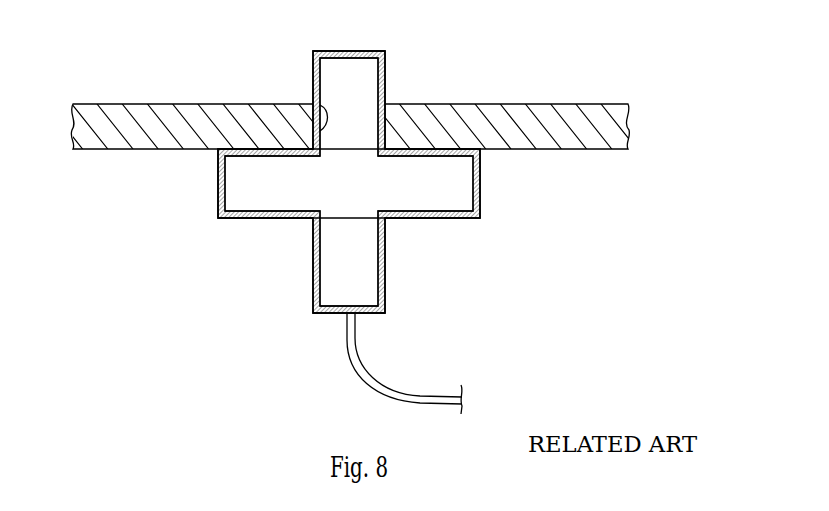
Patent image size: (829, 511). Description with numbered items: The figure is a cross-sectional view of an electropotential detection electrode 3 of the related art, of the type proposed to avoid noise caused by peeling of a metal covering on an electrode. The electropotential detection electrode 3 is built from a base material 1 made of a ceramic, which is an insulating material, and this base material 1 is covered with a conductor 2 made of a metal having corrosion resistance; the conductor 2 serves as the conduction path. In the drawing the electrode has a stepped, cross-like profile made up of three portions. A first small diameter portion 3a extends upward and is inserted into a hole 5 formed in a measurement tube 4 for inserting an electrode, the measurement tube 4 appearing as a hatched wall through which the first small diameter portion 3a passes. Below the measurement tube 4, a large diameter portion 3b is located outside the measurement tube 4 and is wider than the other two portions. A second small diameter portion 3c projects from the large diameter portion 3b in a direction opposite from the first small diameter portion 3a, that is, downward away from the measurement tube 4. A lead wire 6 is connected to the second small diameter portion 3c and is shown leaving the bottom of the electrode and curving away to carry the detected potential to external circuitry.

The base material 1 is at (275, 192).
The conductor 2 is at (313, 264).
The electropotential detection electrode 3 is at (452, 301).
The first small diameter portion 3a is at (385, 65).
The large diameter portion 3b is at (480, 202).
The second small diameter portion 3c is at (385, 270).
The measurement tube 4 is at (594, 104).
The hole 5 is at (315, 100).
The lead wire 6 is at (363, 382).